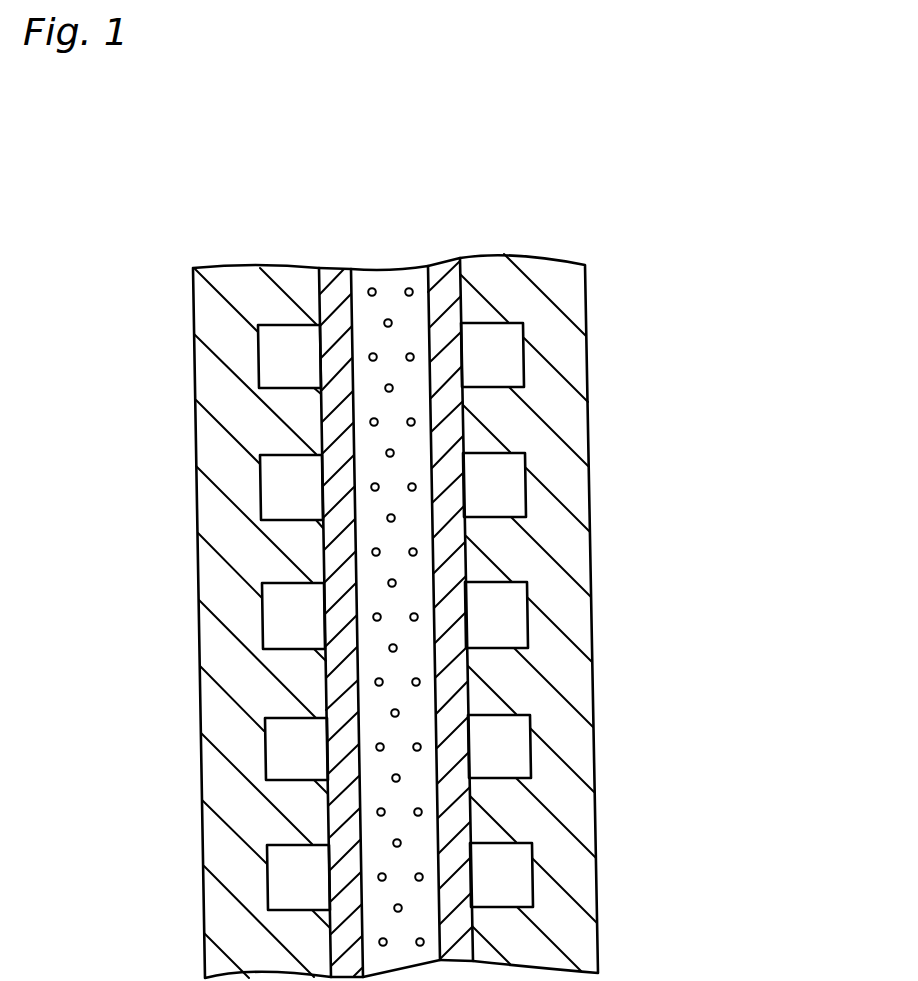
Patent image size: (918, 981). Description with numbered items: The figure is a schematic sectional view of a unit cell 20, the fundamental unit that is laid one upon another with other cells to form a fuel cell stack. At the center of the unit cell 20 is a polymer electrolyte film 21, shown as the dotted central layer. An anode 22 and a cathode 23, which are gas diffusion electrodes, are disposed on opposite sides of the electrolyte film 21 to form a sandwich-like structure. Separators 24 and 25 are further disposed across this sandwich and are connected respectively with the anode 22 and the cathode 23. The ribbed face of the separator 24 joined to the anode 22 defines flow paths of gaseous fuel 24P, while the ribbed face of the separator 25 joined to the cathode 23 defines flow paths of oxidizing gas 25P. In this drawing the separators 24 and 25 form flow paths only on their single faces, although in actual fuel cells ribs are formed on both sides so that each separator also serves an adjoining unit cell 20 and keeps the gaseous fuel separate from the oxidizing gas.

The unit cell 20 is at (657, 174).
The polymer electrolyte film 21 is at (387, 267).
The anode 22 is at (445, 257).
The cathode 23 is at (337, 267).
The separator 24 is at (533, 253).
The flow paths of gaseous fuel 24P is at (510, 478).
The separator 25 is at (250, 265).
The flow paths of oxidizing gas 25P is at (272, 482).